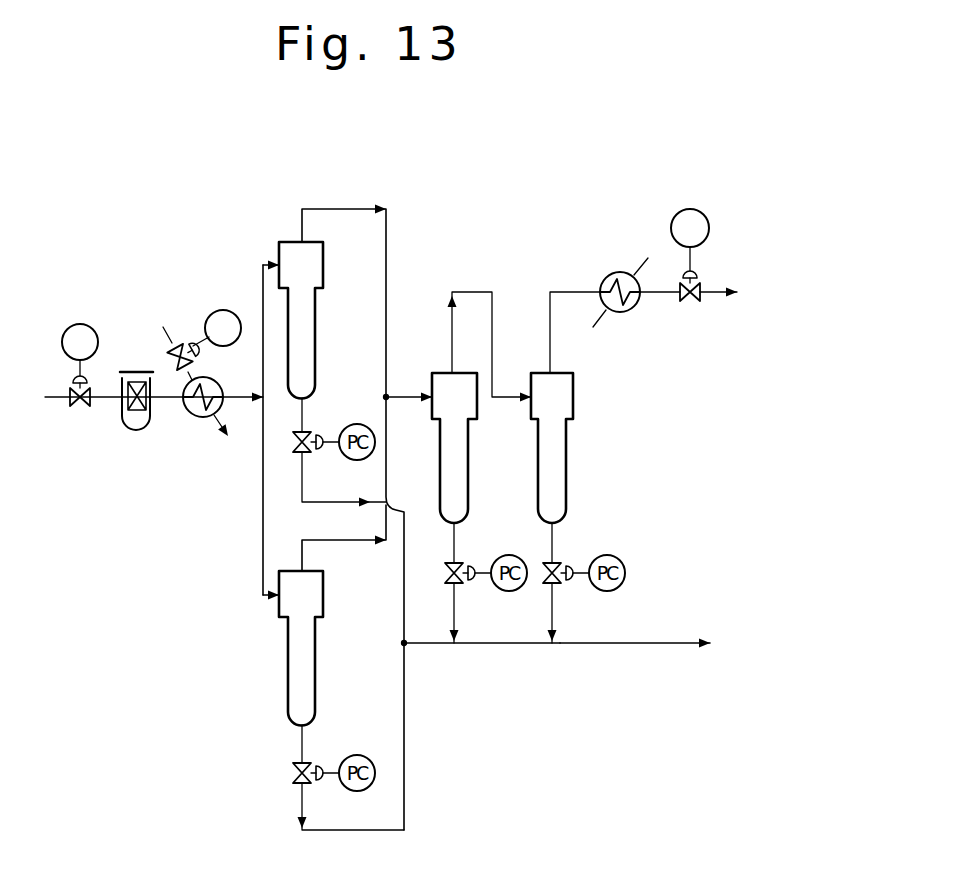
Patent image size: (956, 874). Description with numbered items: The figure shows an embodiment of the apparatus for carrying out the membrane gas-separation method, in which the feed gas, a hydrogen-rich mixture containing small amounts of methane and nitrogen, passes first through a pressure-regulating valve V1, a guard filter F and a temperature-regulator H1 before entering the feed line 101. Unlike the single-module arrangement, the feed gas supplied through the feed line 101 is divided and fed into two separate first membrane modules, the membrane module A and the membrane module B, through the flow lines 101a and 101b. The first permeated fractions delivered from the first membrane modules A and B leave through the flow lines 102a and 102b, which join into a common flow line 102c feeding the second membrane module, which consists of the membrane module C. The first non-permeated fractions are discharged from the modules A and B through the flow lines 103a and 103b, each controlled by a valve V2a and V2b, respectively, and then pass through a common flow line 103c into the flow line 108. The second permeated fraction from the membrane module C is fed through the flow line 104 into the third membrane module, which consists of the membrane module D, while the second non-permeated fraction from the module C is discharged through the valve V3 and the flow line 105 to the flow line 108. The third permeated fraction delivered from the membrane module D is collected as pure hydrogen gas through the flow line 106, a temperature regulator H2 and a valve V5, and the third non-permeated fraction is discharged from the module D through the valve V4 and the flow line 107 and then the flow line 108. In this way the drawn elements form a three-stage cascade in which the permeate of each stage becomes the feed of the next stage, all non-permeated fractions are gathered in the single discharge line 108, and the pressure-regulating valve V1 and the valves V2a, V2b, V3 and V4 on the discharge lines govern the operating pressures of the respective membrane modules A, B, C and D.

The feed line 101 is at (240, 394).
The flow line 101a is at (260, 292).
The flow line 101b is at (263, 541).
The flow line 102a is at (306, 208).
The flow line 102b is at (303, 560).
The flow line 102c is at (410, 396).
The flow line 103a is at (303, 410).
The flow line 103b is at (303, 740).
The flow line 103c is at (430, 645).
The flow line 104 is at (448, 320).
The flow line 105 is at (458, 530).
The flow line 106 is at (548, 320).
The flow line 107 is at (556, 530).
The flow line 108 is at (590, 645).
The membrane module A is at (316, 332).
The membrane module B is at (316, 658).
The membrane module C is at (468, 460).
The membrane module D is at (566, 460).
The guard filter F is at (136, 430).
The temperature-regulator H1 is at (197, 418).
The temperature regulator H2 is at (625, 313).
The pressure-regulating valve V1 is at (82, 406).
The valve V2a is at (310, 451).
The valve V2b is at (296, 790).
The valve V3 is at (460, 590).
The valve V4 is at (558, 590).
The valve V5 is at (695, 304).